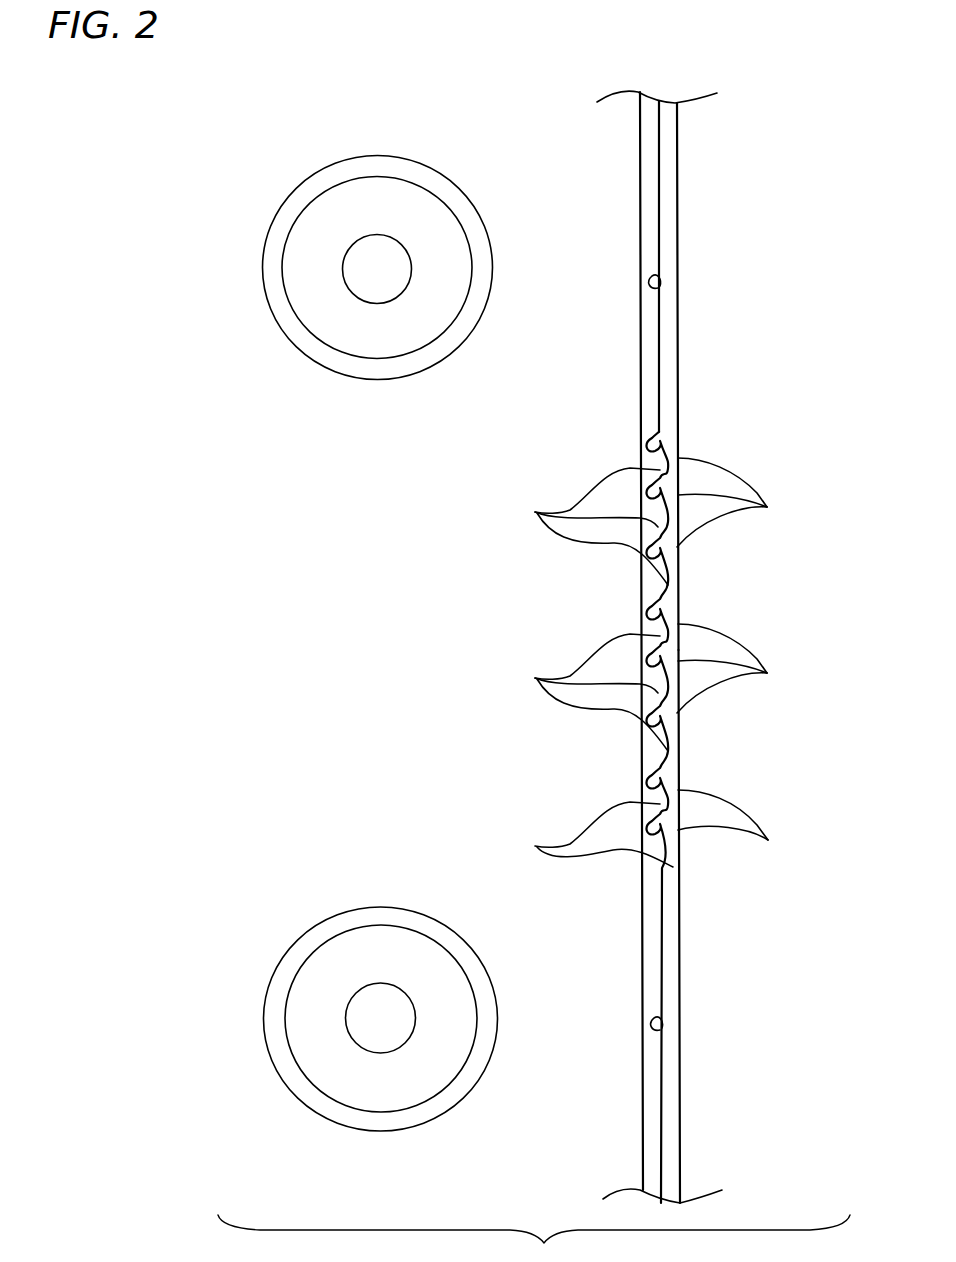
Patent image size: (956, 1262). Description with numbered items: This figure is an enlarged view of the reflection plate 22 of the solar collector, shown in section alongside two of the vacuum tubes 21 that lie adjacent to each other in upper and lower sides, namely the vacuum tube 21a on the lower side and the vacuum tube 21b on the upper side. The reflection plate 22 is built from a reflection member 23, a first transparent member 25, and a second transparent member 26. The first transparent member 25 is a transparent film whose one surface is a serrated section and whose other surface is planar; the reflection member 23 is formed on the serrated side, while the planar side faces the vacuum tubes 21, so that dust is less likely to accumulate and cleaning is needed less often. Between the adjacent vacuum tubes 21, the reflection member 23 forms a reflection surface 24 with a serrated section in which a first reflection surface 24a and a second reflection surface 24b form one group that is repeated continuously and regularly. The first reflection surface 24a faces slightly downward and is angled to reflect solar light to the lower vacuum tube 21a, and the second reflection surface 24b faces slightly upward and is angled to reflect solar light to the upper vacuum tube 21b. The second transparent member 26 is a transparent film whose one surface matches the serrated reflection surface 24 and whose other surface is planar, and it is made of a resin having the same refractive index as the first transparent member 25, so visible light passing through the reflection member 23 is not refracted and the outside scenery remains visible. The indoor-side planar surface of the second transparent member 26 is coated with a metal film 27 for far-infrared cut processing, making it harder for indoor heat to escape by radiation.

The vacuum tube 21 is at (360, 644).
The vacuum tube on a lower side 21a is at (340, 925).
The vacuum tube on an upper side 21b is at (337, 358).
The reflection plate 22 is at (649, 647).
The reflection member 23 is at (658, 288).
The reflection surface 24 is at (649, 663).
The first reflection surface 24a is at (764, 663).
The second reflection surface 24b is at (560, 667).
The first transparent member 25 is at (648, 222).
The second transparent member 26 is at (670, 197).
The metal film 27 is at (680, 927).